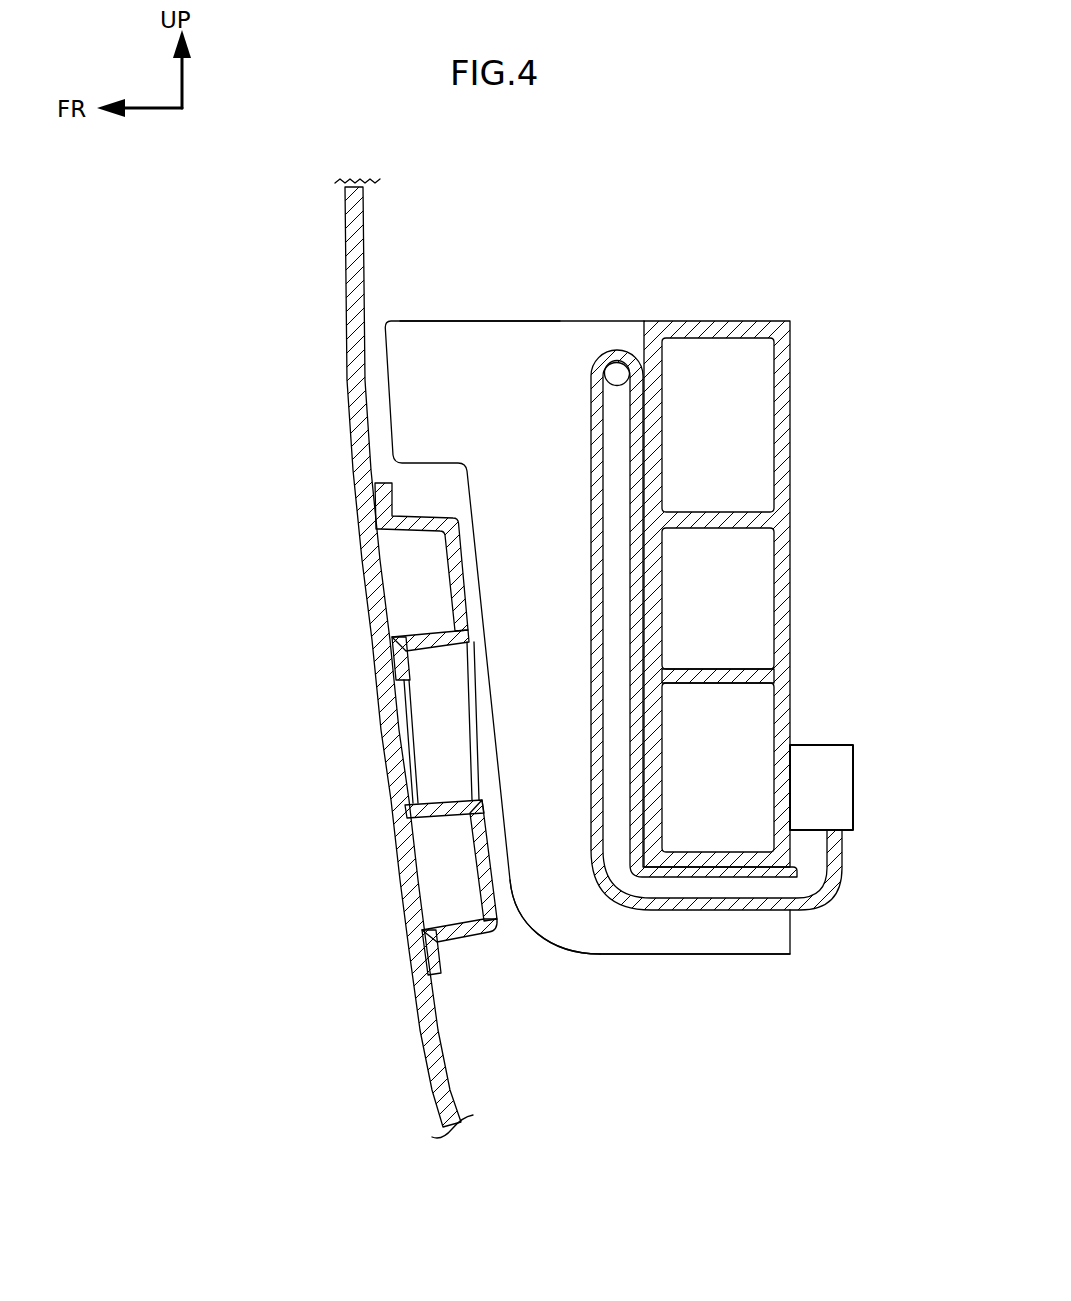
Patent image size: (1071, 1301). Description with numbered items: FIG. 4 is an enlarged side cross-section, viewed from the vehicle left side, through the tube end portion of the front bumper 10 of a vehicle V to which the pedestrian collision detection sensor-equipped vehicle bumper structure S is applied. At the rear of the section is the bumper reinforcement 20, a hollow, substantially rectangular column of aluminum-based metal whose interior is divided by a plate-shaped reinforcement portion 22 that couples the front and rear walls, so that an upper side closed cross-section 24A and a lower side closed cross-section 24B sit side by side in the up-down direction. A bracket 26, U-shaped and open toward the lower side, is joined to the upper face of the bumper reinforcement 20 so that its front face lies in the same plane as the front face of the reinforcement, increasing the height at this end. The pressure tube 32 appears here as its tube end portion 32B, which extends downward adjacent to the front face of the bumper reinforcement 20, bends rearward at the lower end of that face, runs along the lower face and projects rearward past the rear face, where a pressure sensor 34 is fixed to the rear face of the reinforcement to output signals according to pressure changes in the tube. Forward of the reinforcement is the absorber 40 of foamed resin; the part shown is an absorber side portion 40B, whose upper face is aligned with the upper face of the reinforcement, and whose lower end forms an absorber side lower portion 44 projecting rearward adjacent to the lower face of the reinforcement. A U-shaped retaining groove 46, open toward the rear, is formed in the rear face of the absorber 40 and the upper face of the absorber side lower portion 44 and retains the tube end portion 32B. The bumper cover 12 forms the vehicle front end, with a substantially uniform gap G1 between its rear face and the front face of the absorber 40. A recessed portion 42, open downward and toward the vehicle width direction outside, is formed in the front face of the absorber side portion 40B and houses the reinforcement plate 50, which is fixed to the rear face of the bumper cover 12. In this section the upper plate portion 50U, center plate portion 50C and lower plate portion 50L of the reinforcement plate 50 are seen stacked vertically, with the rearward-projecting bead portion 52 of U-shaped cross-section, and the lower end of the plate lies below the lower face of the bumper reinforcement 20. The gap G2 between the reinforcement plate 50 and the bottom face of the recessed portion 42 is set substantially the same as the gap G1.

The front bumper 10 is at (260, 288).
The bumper cover 12 is at (418, 1060).
The bumper reinforcement 20 is at (776, 594).
The reinforcement portion 22 is at (712, 684).
The upper side closed cross-section 24A is at (741, 605).
The lower side closed cross-section 24B is at (741, 795).
The bracket 26 is at (793, 421).
The pressure tube 32 is at (704, 567).
The tube end portion 32B is at (590, 408).
The pressure sensor 34 is at (824, 745).
The absorber 40 is at (517, 320).
The absorber side portion 40B is at (445, 320).
The recessed portion 42 is at (410, 466).
The absorber side lower portion 44 is at (697, 955).
The retaining groove 46 is at (603, 851).
The reinforcement plate 50 is at (386, 742).
The upper plate portion 50U is at (357, 485).
The center plate portion 50C is at (400, 684).
The lower plate portion 50L is at (411, 969).
The bead portion 52 is at (436, 638).
The gap G1 is at (375, 352).
The gap G2 is at (490, 740).
The pedestrian collision detection sensor-equipped vehicle bumper structure S is at (309, 991).
The vehicle V is at (298, 150).